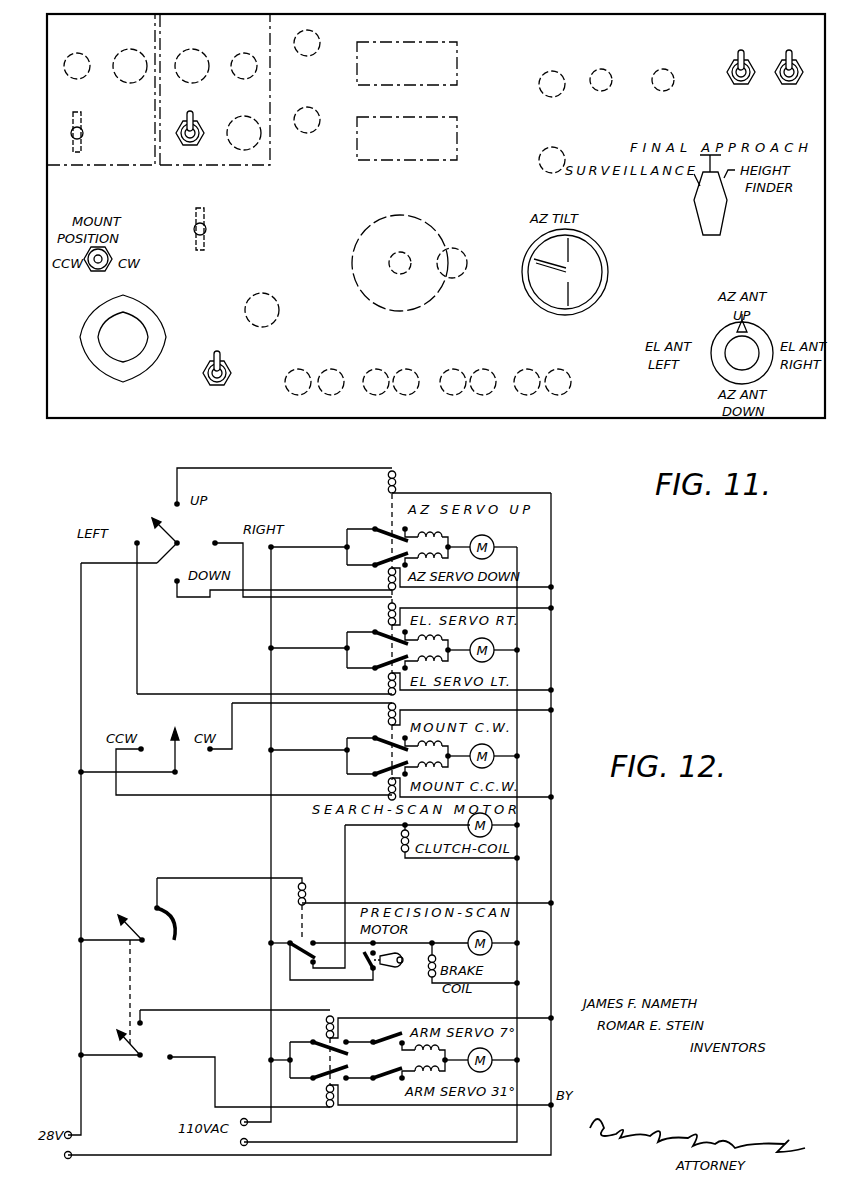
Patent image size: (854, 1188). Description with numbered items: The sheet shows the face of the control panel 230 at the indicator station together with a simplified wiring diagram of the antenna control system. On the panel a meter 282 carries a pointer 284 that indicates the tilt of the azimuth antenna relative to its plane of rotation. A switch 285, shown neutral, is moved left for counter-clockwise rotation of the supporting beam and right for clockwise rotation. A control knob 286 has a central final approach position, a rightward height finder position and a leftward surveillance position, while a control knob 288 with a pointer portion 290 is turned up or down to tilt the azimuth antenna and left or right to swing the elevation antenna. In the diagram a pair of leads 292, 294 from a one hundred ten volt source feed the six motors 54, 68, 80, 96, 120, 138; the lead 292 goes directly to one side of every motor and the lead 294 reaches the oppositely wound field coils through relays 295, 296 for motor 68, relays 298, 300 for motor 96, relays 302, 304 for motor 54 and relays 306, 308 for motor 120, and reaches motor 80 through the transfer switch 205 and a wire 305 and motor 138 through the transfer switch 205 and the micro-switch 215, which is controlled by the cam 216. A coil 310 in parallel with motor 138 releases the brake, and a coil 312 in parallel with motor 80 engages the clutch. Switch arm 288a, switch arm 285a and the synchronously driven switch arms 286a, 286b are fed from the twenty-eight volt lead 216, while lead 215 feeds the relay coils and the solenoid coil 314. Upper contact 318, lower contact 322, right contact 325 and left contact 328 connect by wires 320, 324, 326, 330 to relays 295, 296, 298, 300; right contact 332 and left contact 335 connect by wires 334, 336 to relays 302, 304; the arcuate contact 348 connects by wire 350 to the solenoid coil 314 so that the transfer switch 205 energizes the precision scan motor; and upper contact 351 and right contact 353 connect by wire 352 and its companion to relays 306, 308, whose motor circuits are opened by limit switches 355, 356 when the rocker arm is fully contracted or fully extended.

In FIG. 11, the control panel 230 is at (615, 423).
In FIG. 11, the meter 282 is at (613, 259).
In FIG. 11, the pointer 284 is at (538, 263).
In FIG. 11, the switch 285 is at (92, 278).
In FIG. 11, the control knob 286 is at (729, 216).
In FIG. 11, the control knob 288 is at (720, 330).
In FIG. 11, the pointer portion 290 is at (750, 329).
In FIG. 12, the wire 320 is at (325, 468).
In FIG. 12, the relay 295 is at (400, 480).
In FIG. 12, the upper contact 318 is at (173, 502).
In FIG. 12, the switch arm 288a is at (178, 534).
In FIG. 12, the left contact 328 is at (133, 544).
In FIG. 12, the right contact 325 is at (213, 546).
In FIG. 12, the lower contact 322 is at (176, 584).
In FIG. 12, the wire 324 is at (202, 600).
In FIG. 12, the wire 326 is at (283, 598).
In FIG. 12, the relay 296 is at (386, 578).
In FIG. 12, the relay 298 is at (386, 611).
In FIG. 12, the motor 68 is at (497, 540).
In FIG. 12, the motor 96 is at (497, 643).
In FIG. 12, the wire 330 is at (172, 683).
In FIG. 12, the relay 300 is at (386, 683).
In FIG. 12, the relay 302 is at (386, 713).
In FIG. 12, the relay 304 is at (386, 790).
In FIG. 12, the wire 334 is at (285, 705).
In FIG. 12, the left contact 335 is at (168, 739).
In FIG. 12, the right contact 332 is at (212, 752).
In FIG. 12, the switch arm 285a is at (180, 775).
In FIG. 12, the wire 336 is at (196, 797).
In FIG. 12, the motor 54 is at (497, 749).
In FIG. 12, the wire 305 is at (344, 833).
In FIG. 12, the coil 312 is at (398, 843).
In FIG. 12, the motor 80 is at (492, 832).
In FIG. 12, the coil 314 is at (320, 868).
In FIG. 12, the wire 350 is at (242, 878).
In FIG. 12, the switch arm 286a is at (138, 930).
In FIG. 12, the arcuate contact 348 is at (173, 922).
In FIG. 12, the transfer switch 205 is at (301, 945).
In FIG. 12, the micro-switch 215 is at (150, 1150).
In FIG. 12, the cam 216 is at (82, 1090).
In FIG. 12, the coil 310 is at (432, 985).
In FIG. 12, the motor 138 is at (493, 935).
In FIG. 12, the wire 352 is at (239, 1008).
In FIG. 12, the switch arm 286b is at (125, 1046).
In FIG. 12, the upper contact 351 is at (145, 1023).
In FIG. 12, the right contact 353 is at (172, 1055).
In FIG. 12, the relay 306 is at (325, 1025).
In FIG. 12, the relay 308 is at (325, 1093).
In FIG. 12, the limit switch 355 is at (388, 1040).
In FIG. 12, the limit switch 356 is at (392, 1082).
In FIG. 12, the motor 120 is at (493, 1053).
In FIG. 12, the lead 294 is at (271, 1117).
In FIG. 12, the lead 292 is at (467, 1142).